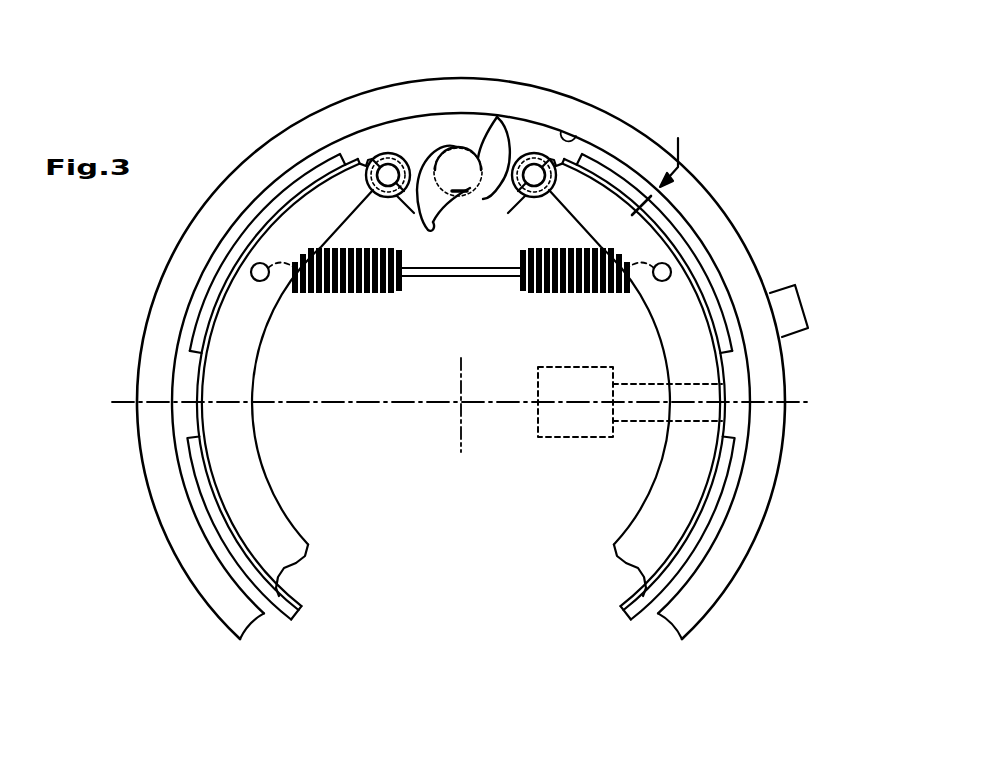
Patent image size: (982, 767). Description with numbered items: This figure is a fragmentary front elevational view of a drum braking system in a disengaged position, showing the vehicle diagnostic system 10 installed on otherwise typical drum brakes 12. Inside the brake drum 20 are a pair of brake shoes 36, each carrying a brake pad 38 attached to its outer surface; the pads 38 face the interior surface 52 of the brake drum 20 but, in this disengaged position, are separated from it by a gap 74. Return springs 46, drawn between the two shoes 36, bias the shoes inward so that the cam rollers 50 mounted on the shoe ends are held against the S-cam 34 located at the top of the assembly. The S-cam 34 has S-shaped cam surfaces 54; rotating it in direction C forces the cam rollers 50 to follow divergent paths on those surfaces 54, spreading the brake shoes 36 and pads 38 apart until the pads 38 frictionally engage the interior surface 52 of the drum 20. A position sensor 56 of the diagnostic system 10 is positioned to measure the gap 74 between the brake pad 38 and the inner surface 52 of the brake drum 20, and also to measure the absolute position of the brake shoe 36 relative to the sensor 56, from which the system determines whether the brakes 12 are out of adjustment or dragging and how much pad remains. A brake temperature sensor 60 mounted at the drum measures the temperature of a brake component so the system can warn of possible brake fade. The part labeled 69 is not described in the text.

The vehicle diagnostic system 10 is at (390, 63).
The drum brakes 12 is at (138, 285).
The brake drum 20 is at (552, 105).
The S-cam 34 is at (455, 160).
The brake shoes 36 is at (258, 538).
The brake pads 38 is at (248, 227).
The return springs 46 is at (386, 296).
The cam rollers 50 is at (385, 155).
The interior surface of the brake drum 52 is at (582, 135).
The S-shaped cam surfaces 54 is at (511, 137).
The position sensor 56 is at (545, 446).
The brake temperature sensor 60 is at (795, 307).
The anchor 69 is at (724, 400).
The gap 74 is at (675, 154).